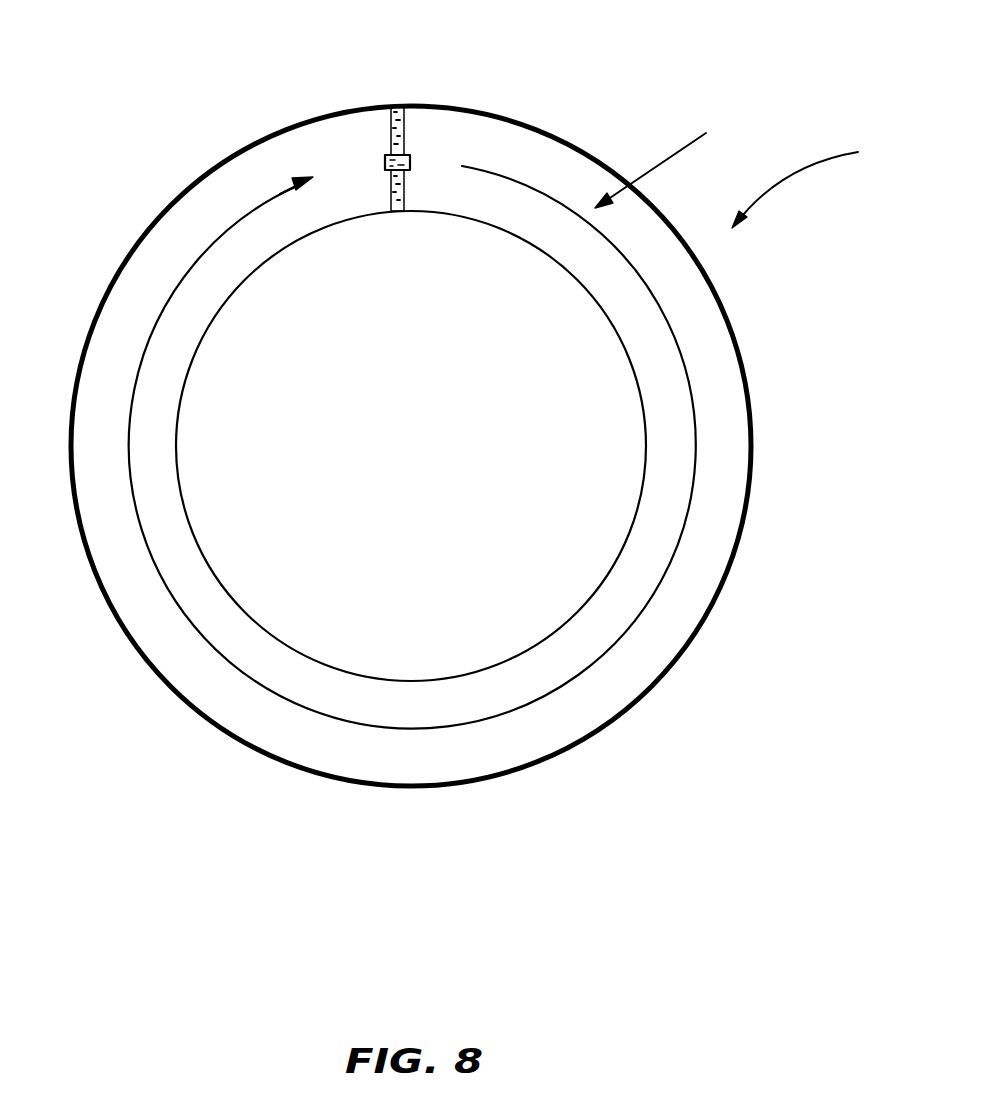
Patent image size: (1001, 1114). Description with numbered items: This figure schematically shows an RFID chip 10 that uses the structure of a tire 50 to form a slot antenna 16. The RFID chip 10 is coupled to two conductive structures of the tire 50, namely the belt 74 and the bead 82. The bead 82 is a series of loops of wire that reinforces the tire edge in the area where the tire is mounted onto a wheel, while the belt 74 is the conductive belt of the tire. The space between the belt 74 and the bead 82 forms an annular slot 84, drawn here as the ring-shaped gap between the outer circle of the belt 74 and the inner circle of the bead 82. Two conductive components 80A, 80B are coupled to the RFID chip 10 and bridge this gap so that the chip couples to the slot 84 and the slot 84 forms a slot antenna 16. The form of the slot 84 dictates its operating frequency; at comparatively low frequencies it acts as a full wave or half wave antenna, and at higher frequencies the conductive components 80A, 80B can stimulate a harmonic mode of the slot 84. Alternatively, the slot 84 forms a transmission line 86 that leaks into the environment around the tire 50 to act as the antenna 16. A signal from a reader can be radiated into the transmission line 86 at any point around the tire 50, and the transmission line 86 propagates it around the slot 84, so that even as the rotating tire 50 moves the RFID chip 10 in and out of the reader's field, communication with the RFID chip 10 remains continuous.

The RFID chip 10 is at (409, 158).
The slot antenna 16 is at (674, 159).
The tire 50 is at (820, 177).
The belt 74 is at (275, 130).
The conductive component 80A is at (392, 105).
The conductive component 80B is at (398, 211).
The bead 82 is at (617, 562).
The annular slot 84 is at (722, 385).
The transmission line 86 is at (187, 270).